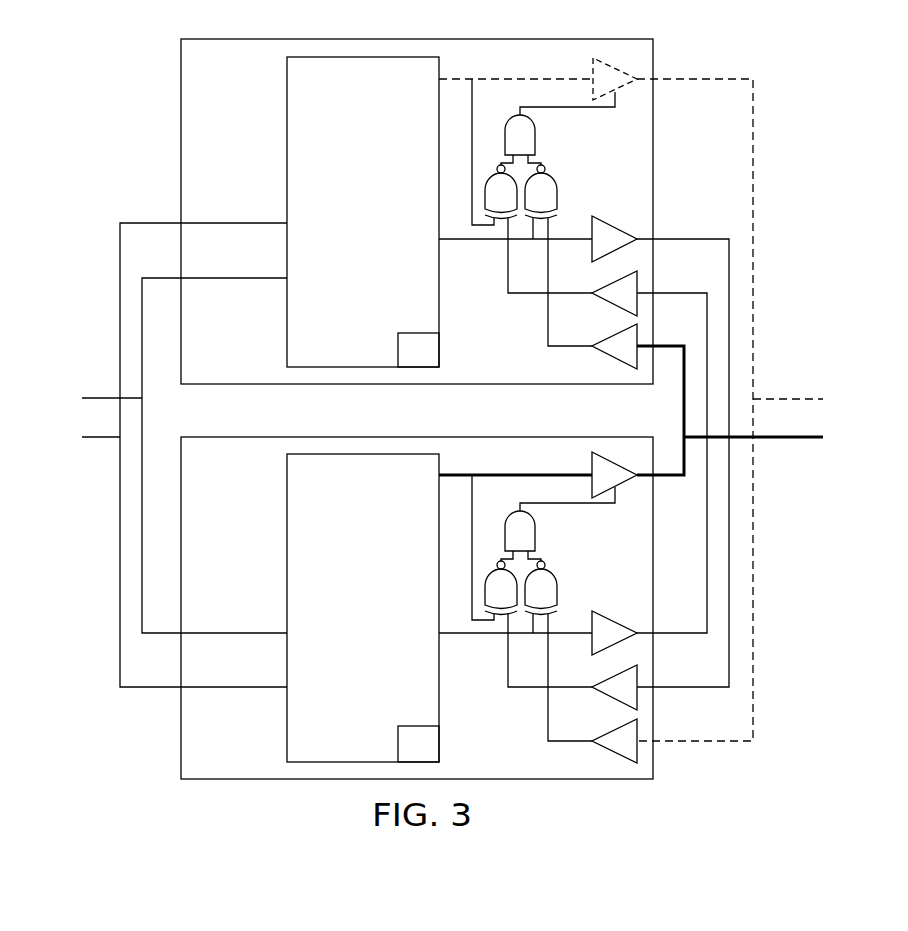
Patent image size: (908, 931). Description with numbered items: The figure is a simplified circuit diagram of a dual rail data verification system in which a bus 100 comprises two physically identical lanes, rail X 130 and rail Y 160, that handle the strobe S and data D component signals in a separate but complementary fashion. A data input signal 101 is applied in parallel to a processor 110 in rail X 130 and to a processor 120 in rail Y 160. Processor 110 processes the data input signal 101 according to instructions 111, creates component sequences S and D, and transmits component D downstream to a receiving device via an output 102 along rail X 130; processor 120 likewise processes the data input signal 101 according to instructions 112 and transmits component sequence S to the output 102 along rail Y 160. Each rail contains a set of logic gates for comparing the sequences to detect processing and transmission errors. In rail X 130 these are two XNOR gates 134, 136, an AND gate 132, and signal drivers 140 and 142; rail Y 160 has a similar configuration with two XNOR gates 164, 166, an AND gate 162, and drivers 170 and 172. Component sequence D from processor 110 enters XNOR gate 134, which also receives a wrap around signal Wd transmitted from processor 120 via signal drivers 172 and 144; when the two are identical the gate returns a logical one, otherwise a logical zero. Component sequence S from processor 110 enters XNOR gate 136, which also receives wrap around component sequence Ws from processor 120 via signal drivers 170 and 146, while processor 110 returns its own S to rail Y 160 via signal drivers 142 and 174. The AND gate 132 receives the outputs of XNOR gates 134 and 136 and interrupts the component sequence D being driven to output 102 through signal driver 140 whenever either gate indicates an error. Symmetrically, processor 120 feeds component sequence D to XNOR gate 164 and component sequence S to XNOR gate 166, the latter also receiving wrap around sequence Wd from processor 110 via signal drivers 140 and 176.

The bus 100 is at (793, 114).
The data input signal 101 is at (42, 431).
The output 102 is at (870, 432).
The processor 110 is at (375, 237).
The instructions 111 is at (432, 361).
The instructions 112 is at (432, 755).
The processor 120 is at (375, 633).
The rail X 130 is at (465, 39).
The AND gate 132 is at (537, 141).
The XNOR gate 134 is at (497, 215).
The XNOR gate 136 is at (546, 173).
The signal driver 140 is at (593, 70).
The signal driver 142 is at (612, 217).
The signal driver 144 is at (612, 309).
The signal driver 146 is at (605, 360).
The rail Y 160 is at (465, 437).
The AND gate 162 is at (537, 537).
The XNOR gate 164 is at (497, 611).
The XNOR gate 166 is at (546, 569).
The signal driver 170 is at (593, 466).
The signal driver 172 is at (612, 612).
The signal driver 174 is at (612, 704).
The signal driver 176 is at (605, 753).